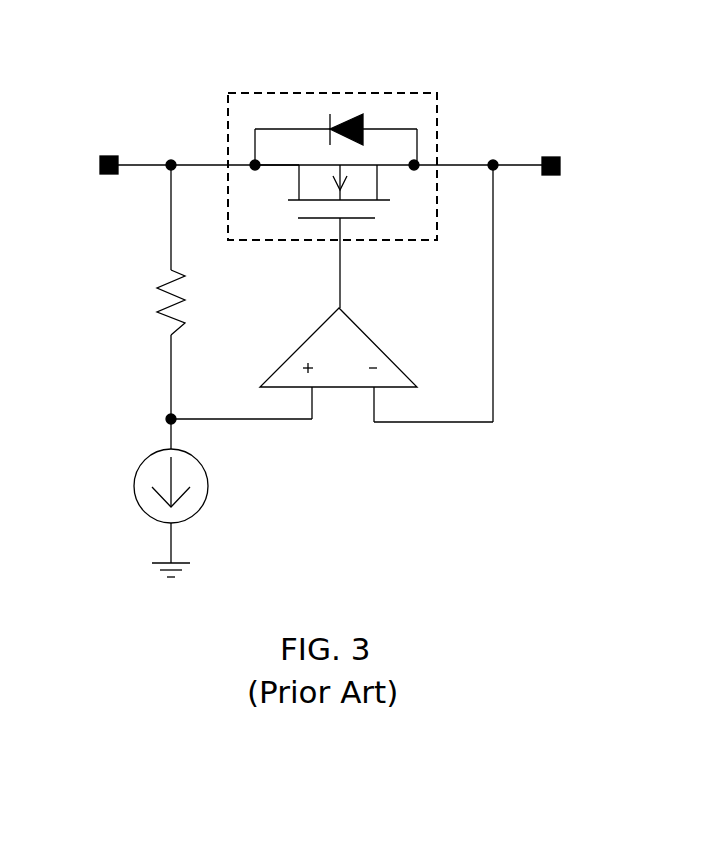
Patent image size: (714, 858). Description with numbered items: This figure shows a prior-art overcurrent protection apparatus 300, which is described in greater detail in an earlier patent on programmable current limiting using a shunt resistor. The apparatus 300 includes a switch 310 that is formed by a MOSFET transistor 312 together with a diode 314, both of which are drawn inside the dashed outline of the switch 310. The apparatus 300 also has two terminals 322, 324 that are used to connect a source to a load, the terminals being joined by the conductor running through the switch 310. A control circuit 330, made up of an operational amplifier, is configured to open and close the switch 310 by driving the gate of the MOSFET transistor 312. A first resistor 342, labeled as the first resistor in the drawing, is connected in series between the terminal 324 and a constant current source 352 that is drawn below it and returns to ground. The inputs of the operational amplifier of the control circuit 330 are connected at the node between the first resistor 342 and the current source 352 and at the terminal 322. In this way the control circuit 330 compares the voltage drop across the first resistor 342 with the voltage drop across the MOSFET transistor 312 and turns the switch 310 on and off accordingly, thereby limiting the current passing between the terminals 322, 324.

The overcurrent protection apparatus 300 is at (86, 73).
The switch 310 is at (252, 93).
The MOSFET transistor 312 is at (348, 217).
The diode 314 is at (353, 112).
The terminal 322 is at (556, 158).
The terminal 324 is at (106, 156).
The control circuit 330 is at (357, 327).
The first resistor 342 is at (136, 276).
The current source 352 is at (138, 470).